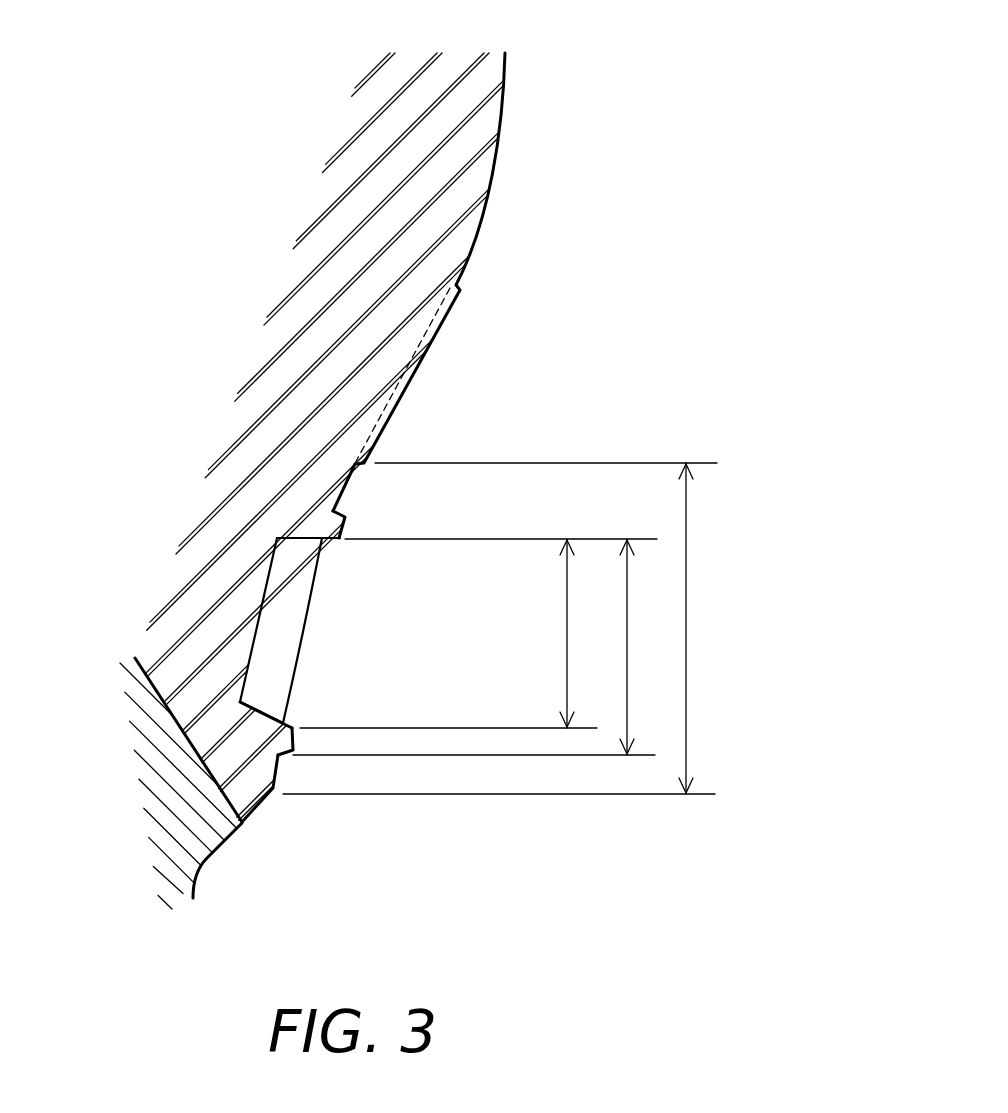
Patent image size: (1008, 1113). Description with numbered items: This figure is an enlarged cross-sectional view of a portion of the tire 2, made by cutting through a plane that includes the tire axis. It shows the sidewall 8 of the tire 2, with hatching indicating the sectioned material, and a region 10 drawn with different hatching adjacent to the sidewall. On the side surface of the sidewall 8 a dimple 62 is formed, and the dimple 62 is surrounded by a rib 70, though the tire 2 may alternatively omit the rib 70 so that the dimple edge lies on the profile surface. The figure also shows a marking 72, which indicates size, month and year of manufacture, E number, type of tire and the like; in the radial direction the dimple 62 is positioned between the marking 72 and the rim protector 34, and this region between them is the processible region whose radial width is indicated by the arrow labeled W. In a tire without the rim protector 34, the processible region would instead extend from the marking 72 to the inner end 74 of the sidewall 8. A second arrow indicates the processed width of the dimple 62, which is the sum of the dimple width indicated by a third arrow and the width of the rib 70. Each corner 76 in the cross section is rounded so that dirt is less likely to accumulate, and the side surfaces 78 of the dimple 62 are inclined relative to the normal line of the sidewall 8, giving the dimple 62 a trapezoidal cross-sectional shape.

The tire 2 is at (680, 31).
The sidewall 8 is at (448, 163).
The casing 10 is at (200, 810).
The rim protector 34 is at (258, 808).
The dimple 62 is at (265, 595).
The rib 70 is at (340, 531).
The marking 72 is at (405, 388).
The inner end 74 is at (243, 825).
The corner 76 is at (240, 700).
The side surface 78 is at (297, 539).